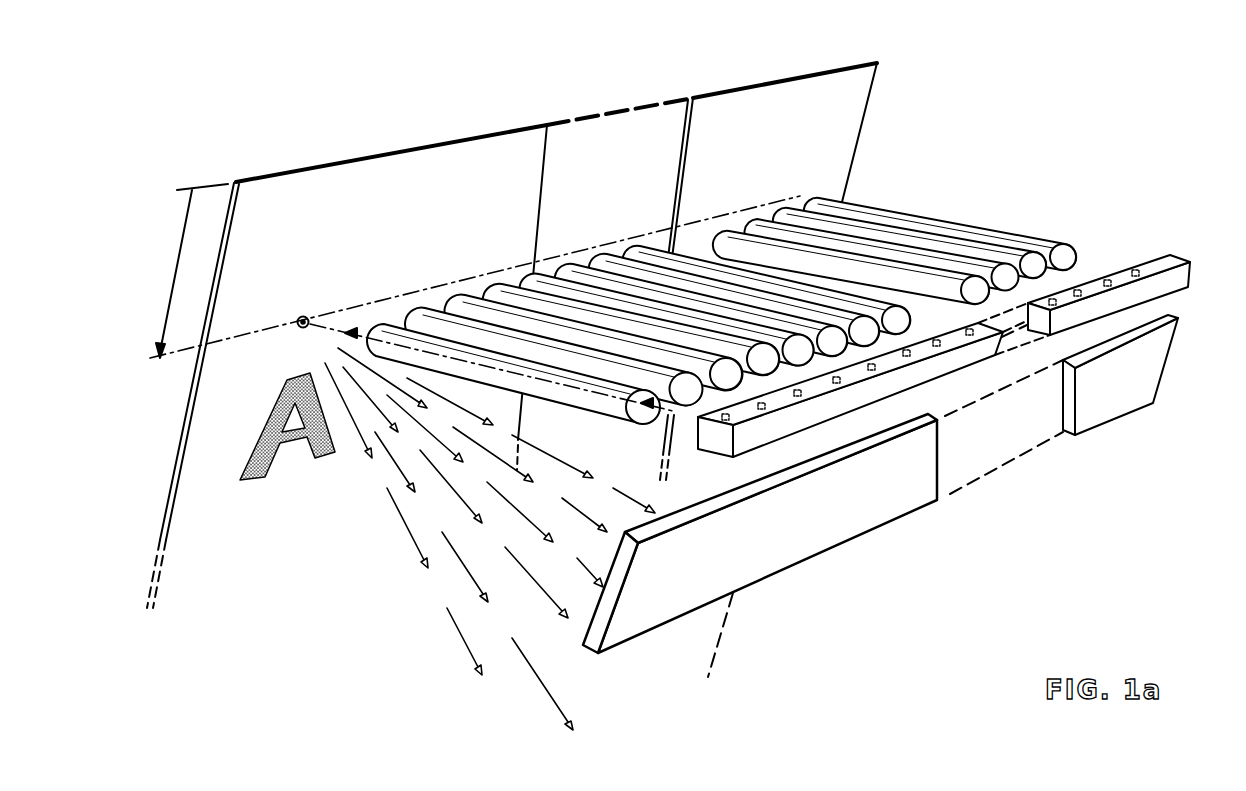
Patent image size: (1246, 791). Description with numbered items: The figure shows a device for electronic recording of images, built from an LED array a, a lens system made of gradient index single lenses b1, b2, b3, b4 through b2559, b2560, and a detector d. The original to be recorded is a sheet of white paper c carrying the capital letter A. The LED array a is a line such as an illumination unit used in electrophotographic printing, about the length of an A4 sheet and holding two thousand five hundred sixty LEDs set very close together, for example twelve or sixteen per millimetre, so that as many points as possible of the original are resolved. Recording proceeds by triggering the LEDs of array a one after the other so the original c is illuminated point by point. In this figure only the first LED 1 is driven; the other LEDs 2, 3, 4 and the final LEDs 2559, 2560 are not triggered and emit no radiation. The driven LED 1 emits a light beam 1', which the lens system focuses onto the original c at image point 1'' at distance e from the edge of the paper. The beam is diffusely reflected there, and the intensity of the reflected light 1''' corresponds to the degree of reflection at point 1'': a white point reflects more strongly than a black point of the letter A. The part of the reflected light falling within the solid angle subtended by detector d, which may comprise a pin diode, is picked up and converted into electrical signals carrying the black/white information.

The LED array a is at (714, 454).
The gradient index single lens b1 is at (577, 400).
The gradient index single lens b2 is at (435, 318).
The gradient index single lens b3 is at (480, 312).
The gradient index single lens b4 is at (522, 302).
The gradient index single lens b2559 is at (907, 233).
The gradient index single lens b2560 is at (1030, 240).
The original c is at (329, 184).
The detector d is at (626, 630).
The distance between panel top and optical axis e is at (189, 283).
The first LED 1 is at (784, 455).
The second LED 2 is at (762, 411).
The third LED 3 is at (798, 398).
The fourth LED 4 is at (837, 384).
The second-to-last LED 2559 is at (1110, 290).
The last LED 2560 is at (1138, 276).
The light beam 1' is at (499, 340).
The image point 1'' is at (315, 297).
The reflected light 1''' is at (490, 539).
The capital letter A is at (287, 426).